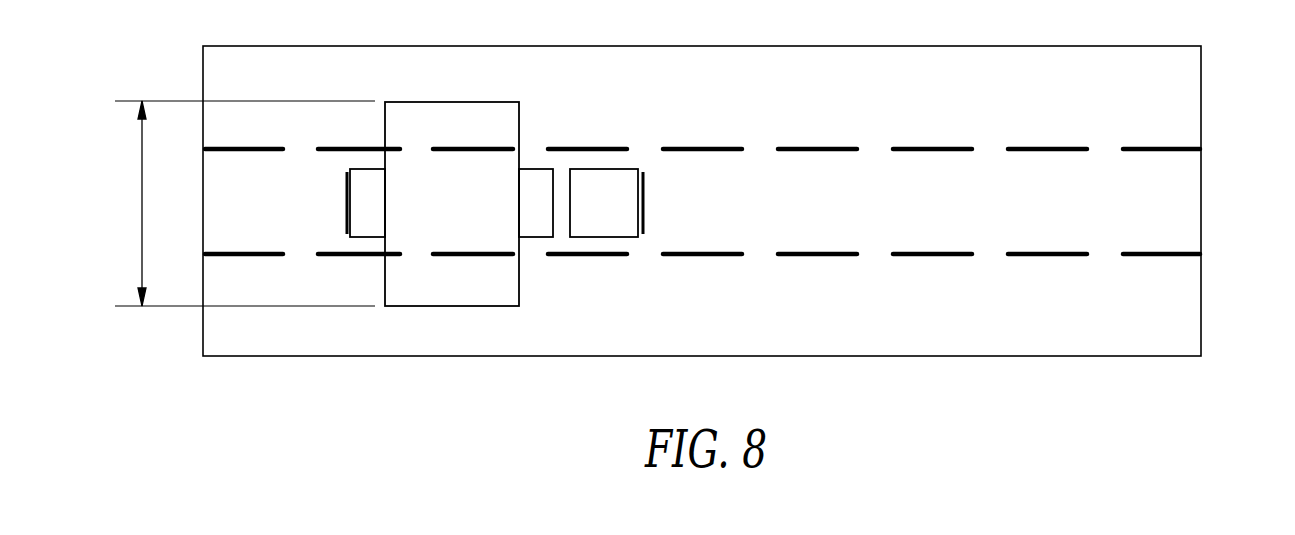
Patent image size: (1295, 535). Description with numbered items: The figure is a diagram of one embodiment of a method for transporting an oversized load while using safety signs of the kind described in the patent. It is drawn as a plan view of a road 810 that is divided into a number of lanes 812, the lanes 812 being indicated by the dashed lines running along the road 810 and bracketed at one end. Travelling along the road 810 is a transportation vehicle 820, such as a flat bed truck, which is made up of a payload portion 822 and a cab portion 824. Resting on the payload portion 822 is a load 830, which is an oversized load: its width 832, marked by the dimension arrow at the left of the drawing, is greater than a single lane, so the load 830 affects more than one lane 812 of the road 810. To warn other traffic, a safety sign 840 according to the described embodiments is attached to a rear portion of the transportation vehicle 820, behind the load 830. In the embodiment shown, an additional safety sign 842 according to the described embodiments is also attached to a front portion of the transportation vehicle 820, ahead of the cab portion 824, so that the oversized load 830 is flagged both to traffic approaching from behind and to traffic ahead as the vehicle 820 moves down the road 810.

The road 810 is at (1017, 345).
The lanes 812 is at (1213, 148).
The transportation vehicle 820 is at (639, 119).
The payload portion 822 is at (537, 225).
The cab portion 824 is at (611, 225).
The load 830 is at (455, 122).
The width 832 is at (142, 202).
The safety sign 840 is at (345, 202).
The additional safety sign 842 is at (645, 203).